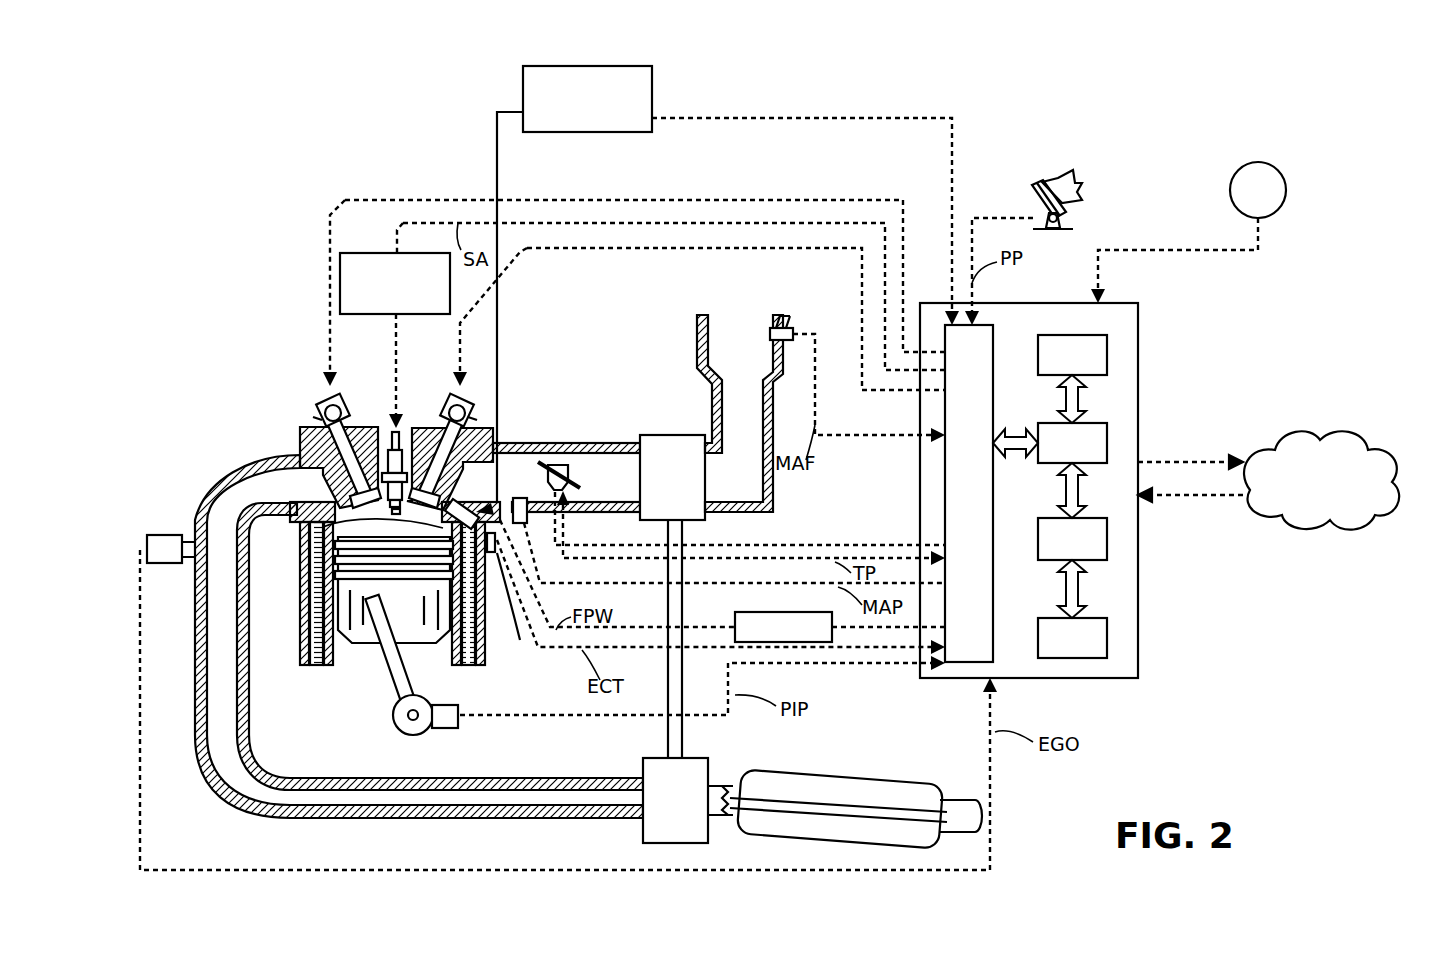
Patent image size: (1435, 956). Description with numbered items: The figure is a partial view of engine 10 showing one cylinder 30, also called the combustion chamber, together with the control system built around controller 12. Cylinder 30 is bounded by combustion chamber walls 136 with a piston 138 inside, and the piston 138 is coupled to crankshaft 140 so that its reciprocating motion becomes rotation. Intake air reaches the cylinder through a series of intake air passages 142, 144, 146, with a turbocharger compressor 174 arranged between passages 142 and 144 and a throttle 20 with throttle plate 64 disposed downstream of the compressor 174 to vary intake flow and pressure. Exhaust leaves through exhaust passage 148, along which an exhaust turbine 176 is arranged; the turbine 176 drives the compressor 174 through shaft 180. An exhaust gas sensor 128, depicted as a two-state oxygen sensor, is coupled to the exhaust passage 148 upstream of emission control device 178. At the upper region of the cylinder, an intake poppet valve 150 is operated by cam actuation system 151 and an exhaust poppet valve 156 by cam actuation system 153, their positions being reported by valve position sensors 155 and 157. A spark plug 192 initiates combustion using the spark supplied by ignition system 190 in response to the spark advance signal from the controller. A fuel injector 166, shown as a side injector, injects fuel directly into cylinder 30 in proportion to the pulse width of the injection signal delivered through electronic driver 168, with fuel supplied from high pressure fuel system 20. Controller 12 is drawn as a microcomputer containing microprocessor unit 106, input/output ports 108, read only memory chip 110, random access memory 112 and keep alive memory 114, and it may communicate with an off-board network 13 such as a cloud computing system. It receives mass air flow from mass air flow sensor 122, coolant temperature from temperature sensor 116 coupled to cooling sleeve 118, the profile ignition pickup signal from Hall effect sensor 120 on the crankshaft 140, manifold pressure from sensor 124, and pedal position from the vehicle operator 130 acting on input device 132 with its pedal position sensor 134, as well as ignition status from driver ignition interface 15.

The engine 10 is at (200, 142).
The controller 12 is at (1130, 303).
The off-board network 13 is at (1330, 440).
The driver ignition interface 15 is at (1248, 202).
The throttle 20 is at (652, 72).
The cylinder 30 is at (440, 646).
The throttle plate 64 is at (538, 465).
The microprocessor unit 106 is at (1107, 442).
The input/output ports 108 is at (1000, 335).
The read only memory chip 110 is at (1107, 352).
The random access memory 112 is at (1107, 540).
The keep alive memory 114 is at (1107, 640).
The temperature sensor 116 is at (521, 642).
The cooling sleeve 118 is at (493, 560).
The Hall effect sensor 120 is at (455, 728).
The mass air flow sensor 122 is at (787, 328).
The sensor 124 is at (522, 525).
The exhaust gas sensor 128 is at (147, 538).
The vehicle operator 130 is at (1085, 178).
The input device 132 is at (1035, 193).
The pedal position sensor 134 is at (1062, 219).
The combustion chamber walls 136 is at (325, 668).
The piston 138 is at (378, 610).
The crankshaft 140 is at (405, 732).
The intake air passage 142 is at (762, 362).
The intake air passage 144 is at (633, 490).
The intake air passage 146 is at (535, 490).
The exhaust passage 148 is at (290, 499).
The intake poppet valve 150 is at (428, 497).
The cam actuation system 151 is at (453, 400).
The cam actuation system 153 is at (336, 400).
The valve position sensor 155 is at (480, 418).
The exhaust poppet valve 156 is at (353, 500).
The valve position sensor 157 is at (318, 413).
The fuel injector 166 is at (469, 505).
The electronic driver 168 is at (738, 614).
The compressor 174 is at (660, 435).
The exhaust turbine 176 is at (643, 833).
The emission control device 178 is at (905, 778).
The shaft 180 is at (682, 730).
The ignition system 190 is at (355, 253).
The spark plug 192 is at (390, 462).